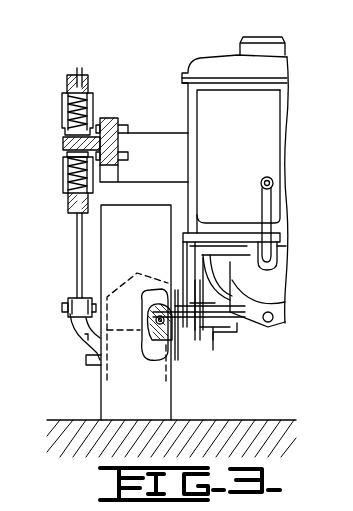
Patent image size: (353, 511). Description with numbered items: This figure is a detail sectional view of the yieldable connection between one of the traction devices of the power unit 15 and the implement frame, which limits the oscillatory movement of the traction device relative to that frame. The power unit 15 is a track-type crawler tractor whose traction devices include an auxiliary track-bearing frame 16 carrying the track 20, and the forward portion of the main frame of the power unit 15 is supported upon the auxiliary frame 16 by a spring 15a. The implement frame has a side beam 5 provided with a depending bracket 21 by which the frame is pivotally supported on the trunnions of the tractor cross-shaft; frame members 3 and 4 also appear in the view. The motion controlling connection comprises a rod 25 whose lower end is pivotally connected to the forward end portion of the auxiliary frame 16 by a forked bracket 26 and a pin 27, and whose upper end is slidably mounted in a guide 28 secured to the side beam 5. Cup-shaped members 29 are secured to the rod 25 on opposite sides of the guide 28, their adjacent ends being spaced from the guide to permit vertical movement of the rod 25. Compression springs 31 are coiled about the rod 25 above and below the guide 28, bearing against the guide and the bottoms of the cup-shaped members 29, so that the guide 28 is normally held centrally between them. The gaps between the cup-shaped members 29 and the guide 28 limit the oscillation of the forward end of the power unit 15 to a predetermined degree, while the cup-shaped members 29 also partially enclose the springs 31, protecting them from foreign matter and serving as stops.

The frame member 3 is at (4, 261).
The frame member 4 is at (4, 293).
The side beam 5 is at (113, 120).
The power unit 15 is at (208, 60).
The spring 15a is at (237, 333).
The auxiliary track-bearing frame 16 is at (163, 338).
The track 20 is at (178, 390).
The depending bracket 21 is at (7, 225).
The rod 25 is at (78, 249).
The forked bracket 26 is at (73, 323).
The pin 27 is at (62, 307).
The guide 28 is at (62, 141).
The cup-shaped member 29 is at (62, 96).
The compression spring 31 is at (95, 92).